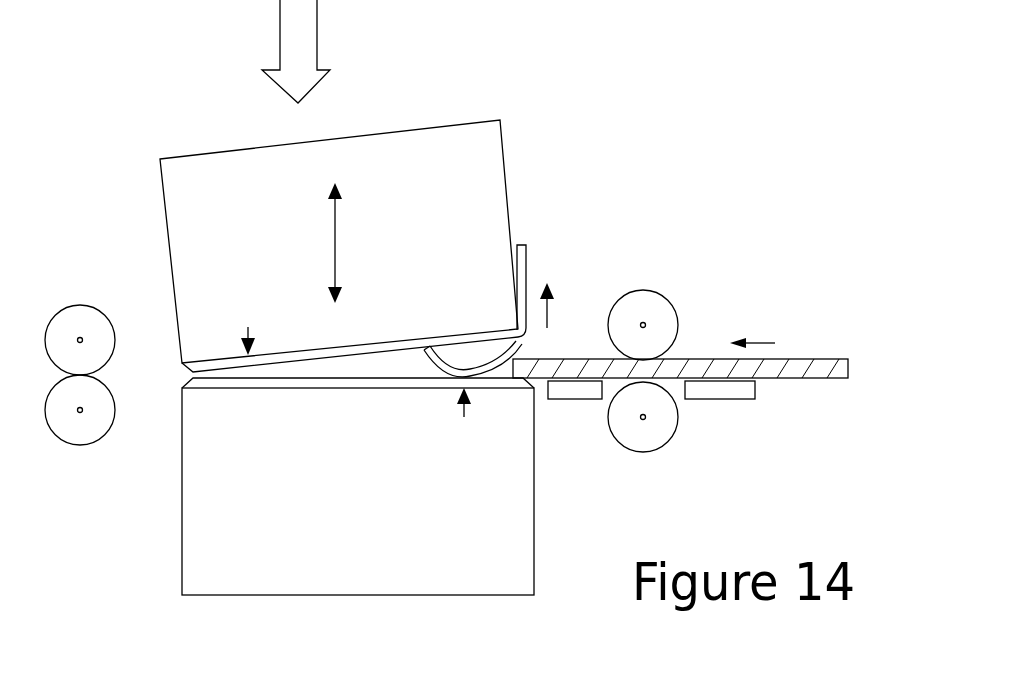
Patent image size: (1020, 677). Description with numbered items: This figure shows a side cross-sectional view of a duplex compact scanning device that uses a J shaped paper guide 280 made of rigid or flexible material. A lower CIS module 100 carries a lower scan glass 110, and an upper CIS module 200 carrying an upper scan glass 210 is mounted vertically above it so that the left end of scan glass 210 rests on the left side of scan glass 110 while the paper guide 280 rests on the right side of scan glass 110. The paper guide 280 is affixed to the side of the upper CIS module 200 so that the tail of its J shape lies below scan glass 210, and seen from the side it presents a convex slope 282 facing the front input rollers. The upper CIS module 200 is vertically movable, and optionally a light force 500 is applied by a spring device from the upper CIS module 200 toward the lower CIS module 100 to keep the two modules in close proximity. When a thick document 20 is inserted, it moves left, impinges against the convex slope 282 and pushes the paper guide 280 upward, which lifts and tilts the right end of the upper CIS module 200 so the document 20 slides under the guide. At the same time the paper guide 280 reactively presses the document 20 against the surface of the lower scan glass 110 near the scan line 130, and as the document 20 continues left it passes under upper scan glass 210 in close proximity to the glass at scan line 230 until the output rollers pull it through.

The document 20 is at (797, 368).
The lower CIS module 100 is at (238, 557).
The scan glass 110 is at (305, 380).
The scan line 130 is at (465, 418).
The upper CIS module 200 is at (397, 168).
The scan glass 210 is at (405, 340).
The scan line 230 is at (243, 322).
The paper guide 280 is at (523, 255).
The convex slope 282 is at (527, 348).
The light force 500 is at (303, 32).